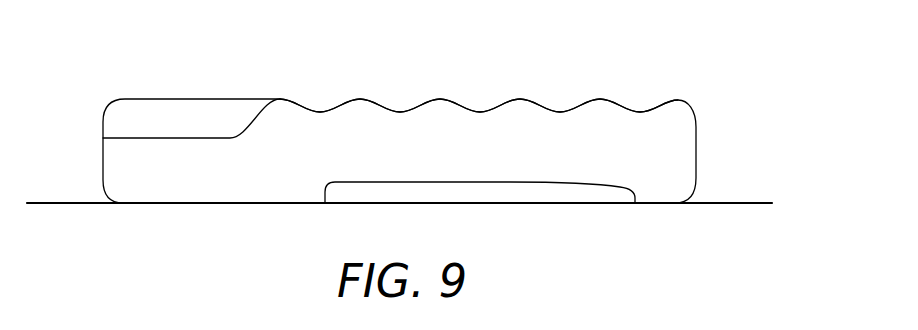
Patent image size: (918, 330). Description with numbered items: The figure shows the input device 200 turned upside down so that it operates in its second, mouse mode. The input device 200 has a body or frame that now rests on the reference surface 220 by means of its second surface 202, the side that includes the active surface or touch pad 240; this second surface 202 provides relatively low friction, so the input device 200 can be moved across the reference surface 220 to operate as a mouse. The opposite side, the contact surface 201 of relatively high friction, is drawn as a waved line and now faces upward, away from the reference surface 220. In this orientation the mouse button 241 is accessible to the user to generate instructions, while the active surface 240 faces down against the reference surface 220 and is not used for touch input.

The input device 200 is at (417, 143).
The contact surface 201 is at (487, 110).
The second surface 202 is at (232, 193).
The reference surface 220 is at (744, 203).
The active surface 240 is at (522, 193).
The mouse button 241 is at (187, 110).